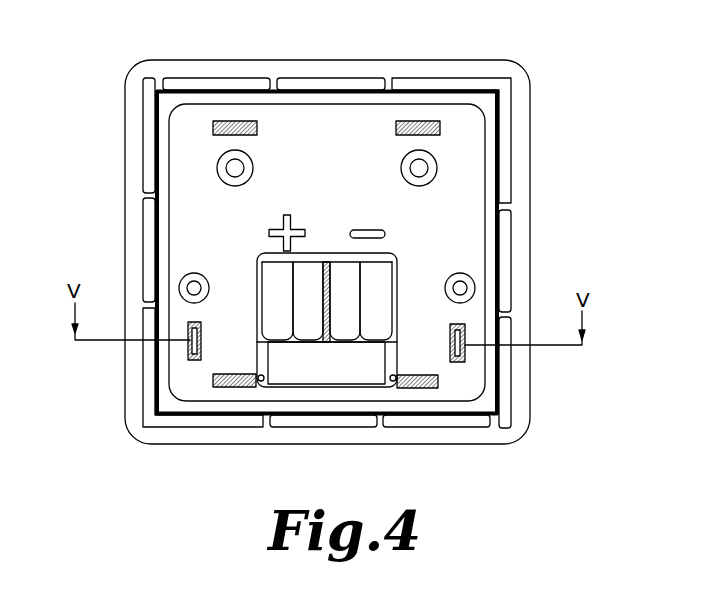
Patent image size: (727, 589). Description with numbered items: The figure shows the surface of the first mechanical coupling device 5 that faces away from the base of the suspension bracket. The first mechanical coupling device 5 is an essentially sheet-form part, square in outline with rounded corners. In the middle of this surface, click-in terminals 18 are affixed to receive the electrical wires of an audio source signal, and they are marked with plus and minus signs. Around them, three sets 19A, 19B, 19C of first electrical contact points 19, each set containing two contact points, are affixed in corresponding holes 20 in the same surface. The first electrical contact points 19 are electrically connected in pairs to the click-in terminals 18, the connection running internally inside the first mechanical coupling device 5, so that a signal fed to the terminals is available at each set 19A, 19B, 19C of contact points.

The first mechanical coupling device 5 is at (531, 212).
The click-in terminals 18 is at (277, 322).
The first electrical contact points 19 is at (351, 263).
The first set of first electrical contact points 19A is at (227, 374).
The second set of first electrical contact points 19B is at (465, 337).
The third set of first electrical contact points 19C is at (426, 374).
The holes 20 is at (408, 120).